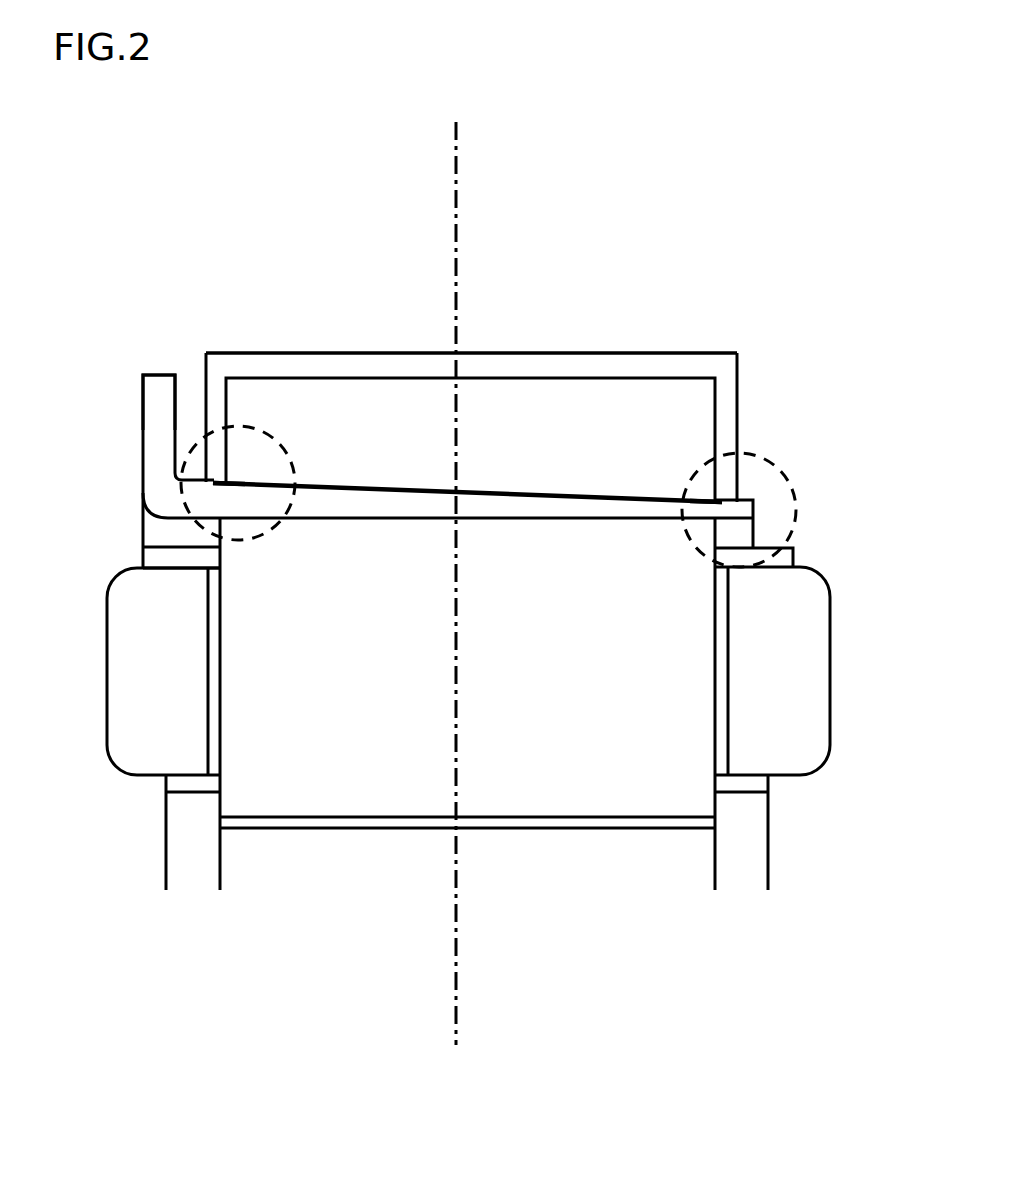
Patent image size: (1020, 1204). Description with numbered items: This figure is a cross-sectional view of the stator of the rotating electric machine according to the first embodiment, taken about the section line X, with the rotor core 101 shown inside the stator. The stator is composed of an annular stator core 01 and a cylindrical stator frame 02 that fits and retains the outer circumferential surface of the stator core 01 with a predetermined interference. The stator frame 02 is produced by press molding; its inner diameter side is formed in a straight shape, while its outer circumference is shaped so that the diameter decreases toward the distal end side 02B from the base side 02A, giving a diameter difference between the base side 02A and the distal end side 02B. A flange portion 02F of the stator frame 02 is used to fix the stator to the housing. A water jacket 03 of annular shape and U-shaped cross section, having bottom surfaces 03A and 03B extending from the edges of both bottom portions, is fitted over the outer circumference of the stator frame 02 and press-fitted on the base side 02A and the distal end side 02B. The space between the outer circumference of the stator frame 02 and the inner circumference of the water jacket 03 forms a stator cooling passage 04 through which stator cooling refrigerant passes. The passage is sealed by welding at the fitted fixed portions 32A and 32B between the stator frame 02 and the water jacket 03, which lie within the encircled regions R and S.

The stator core 01 is at (272, 790).
The rotor core 101 is at (629, 865).
The stator frame 02 is at (305, 502).
The base side 02A is at (210, 487).
The distal end side 02B is at (723, 502).
The flange portion 02F is at (162, 405).
The water jacket 03 is at (518, 358).
The bottom surface 03A is at (206, 366).
The bottom surface 03B is at (738, 355).
The stator cooling passage 04 is at (643, 432).
The fitted fixed portion 32A is at (228, 483).
The fitted fixed portion 32B is at (715, 497).
The region R is at (258, 427).
The region S is at (797, 510).
The section line X is at (447, 165).